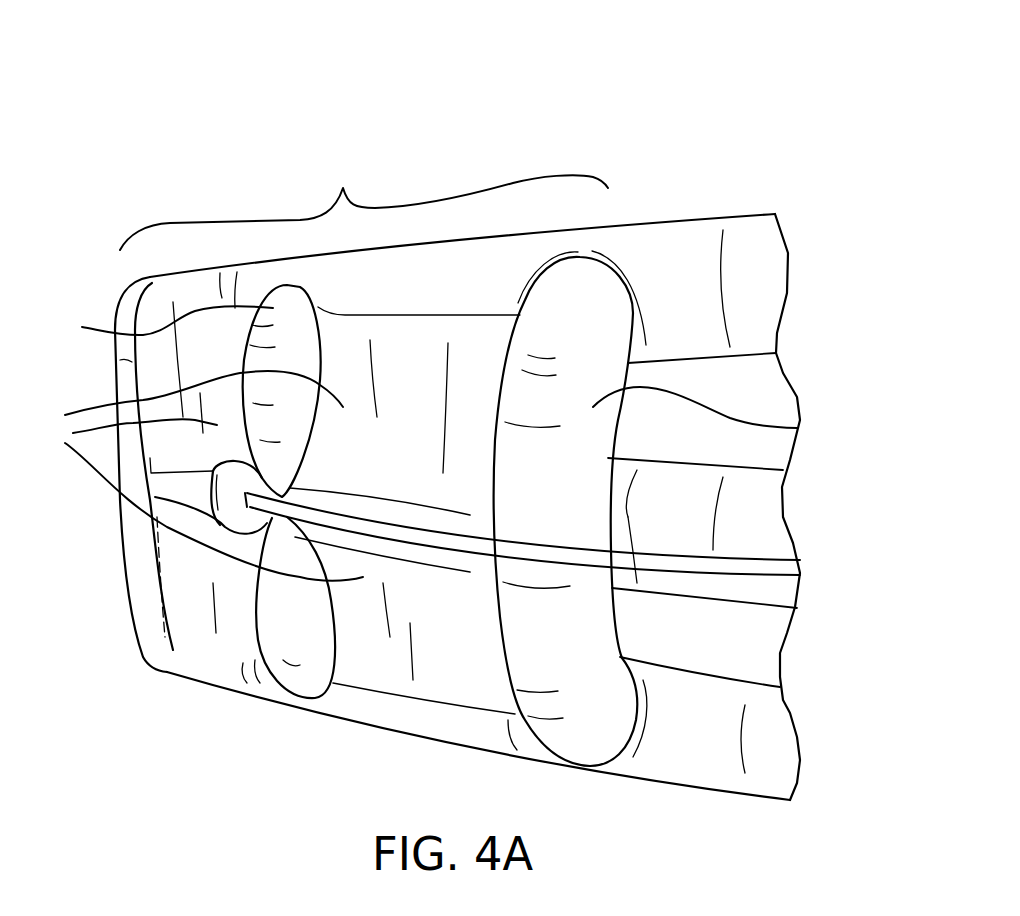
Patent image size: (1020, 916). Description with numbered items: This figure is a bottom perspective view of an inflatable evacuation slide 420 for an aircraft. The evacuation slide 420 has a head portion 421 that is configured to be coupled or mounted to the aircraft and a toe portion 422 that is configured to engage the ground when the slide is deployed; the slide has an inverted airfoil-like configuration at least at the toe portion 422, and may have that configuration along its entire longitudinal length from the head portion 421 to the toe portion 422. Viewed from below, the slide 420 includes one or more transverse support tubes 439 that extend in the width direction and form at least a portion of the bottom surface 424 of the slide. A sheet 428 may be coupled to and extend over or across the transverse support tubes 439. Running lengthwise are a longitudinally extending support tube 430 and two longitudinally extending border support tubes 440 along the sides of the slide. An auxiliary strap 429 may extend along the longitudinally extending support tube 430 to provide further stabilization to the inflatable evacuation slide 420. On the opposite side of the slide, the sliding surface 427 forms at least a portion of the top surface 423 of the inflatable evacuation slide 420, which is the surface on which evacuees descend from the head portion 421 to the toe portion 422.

The evacuation slide 420 is at (188, 82).
The head portion 421 is at (768, 192).
The toe portion 422 is at (364, 203).
The top surface 423 is at (444, 703).
The bottom surface 424 is at (340, 655).
The sliding surface 427 is at (760, 657).
The sheet 428 is at (191, 476).
The auxiliary strap 429 is at (782, 568).
The longitudinally extending support tube 430 is at (773, 523).
The transverse support tubes 439 is at (837, 413).
The longitudinally extending border support tubes 440 is at (753, 307).